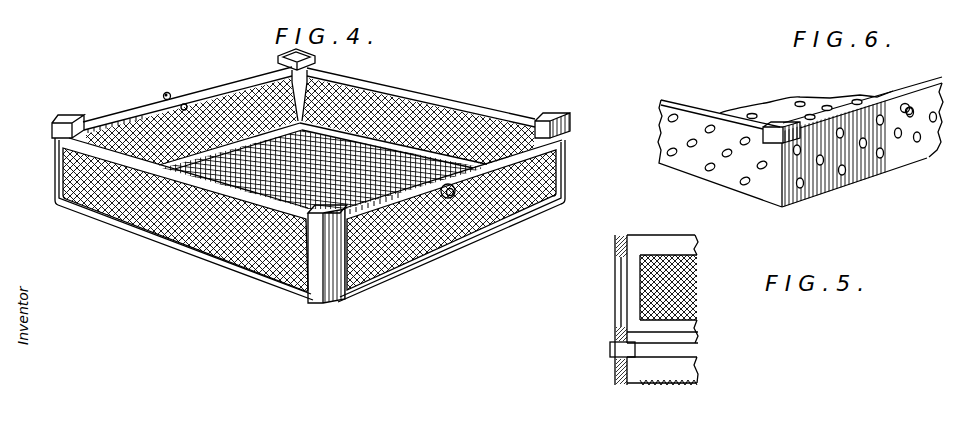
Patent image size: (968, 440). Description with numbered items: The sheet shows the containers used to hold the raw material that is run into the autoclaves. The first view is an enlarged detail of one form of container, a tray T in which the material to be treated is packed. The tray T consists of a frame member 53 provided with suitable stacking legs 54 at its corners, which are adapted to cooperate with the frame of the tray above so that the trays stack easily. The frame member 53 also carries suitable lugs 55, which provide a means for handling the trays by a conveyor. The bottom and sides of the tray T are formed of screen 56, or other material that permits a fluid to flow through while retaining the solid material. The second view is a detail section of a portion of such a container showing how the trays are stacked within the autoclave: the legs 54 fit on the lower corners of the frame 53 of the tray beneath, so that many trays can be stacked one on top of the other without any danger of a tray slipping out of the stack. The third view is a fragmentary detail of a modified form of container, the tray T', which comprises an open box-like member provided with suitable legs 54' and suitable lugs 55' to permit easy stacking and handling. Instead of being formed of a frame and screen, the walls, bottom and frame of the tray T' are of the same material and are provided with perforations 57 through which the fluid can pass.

In FIG. 4, the tray T is at (312, 173).
In FIG. 4, the frame member 53 is at (124, 231).
In FIG. 5, the frame member 53 is at (617, 243).
In FIG. 4, the stacking legs 54 is at (301, 175).
In FIG. 5, the stacking legs 54 is at (602, 347).
In FIG. 4, the lugs 55 is at (187, 85).
In FIG. 4, the screen 56 is at (556, 174).
In FIG. 6, the modified tray T' is at (800, 134).
In FIG. 6, the perforations 57 is at (703, 167).
In FIG. 6, the legs 54' is at (768, 115).
In FIG. 6, the lugs 55' is at (921, 84).